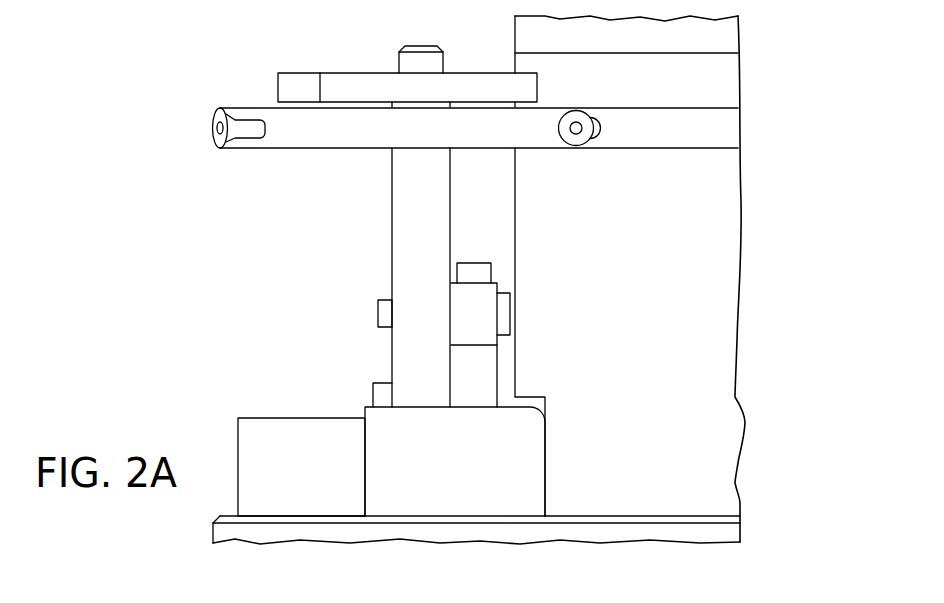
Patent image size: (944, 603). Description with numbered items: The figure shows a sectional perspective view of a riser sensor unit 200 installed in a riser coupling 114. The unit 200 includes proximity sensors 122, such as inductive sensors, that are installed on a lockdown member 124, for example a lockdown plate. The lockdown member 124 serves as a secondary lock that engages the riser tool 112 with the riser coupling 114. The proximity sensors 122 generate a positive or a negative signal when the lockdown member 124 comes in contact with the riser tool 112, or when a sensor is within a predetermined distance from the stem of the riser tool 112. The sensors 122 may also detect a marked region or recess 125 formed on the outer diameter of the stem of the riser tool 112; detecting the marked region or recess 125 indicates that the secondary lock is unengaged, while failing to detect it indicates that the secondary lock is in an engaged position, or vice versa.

The riser sensor unit 200 is at (143, 50).
The riser tool 112 is at (695, 282).
The riser coupling 114 is at (298, 130).
The proximity sensors 122 is at (473, 317).
The lockdown member 124 is at (400, 462).
The marked region or recess 125 is at (700, 79).